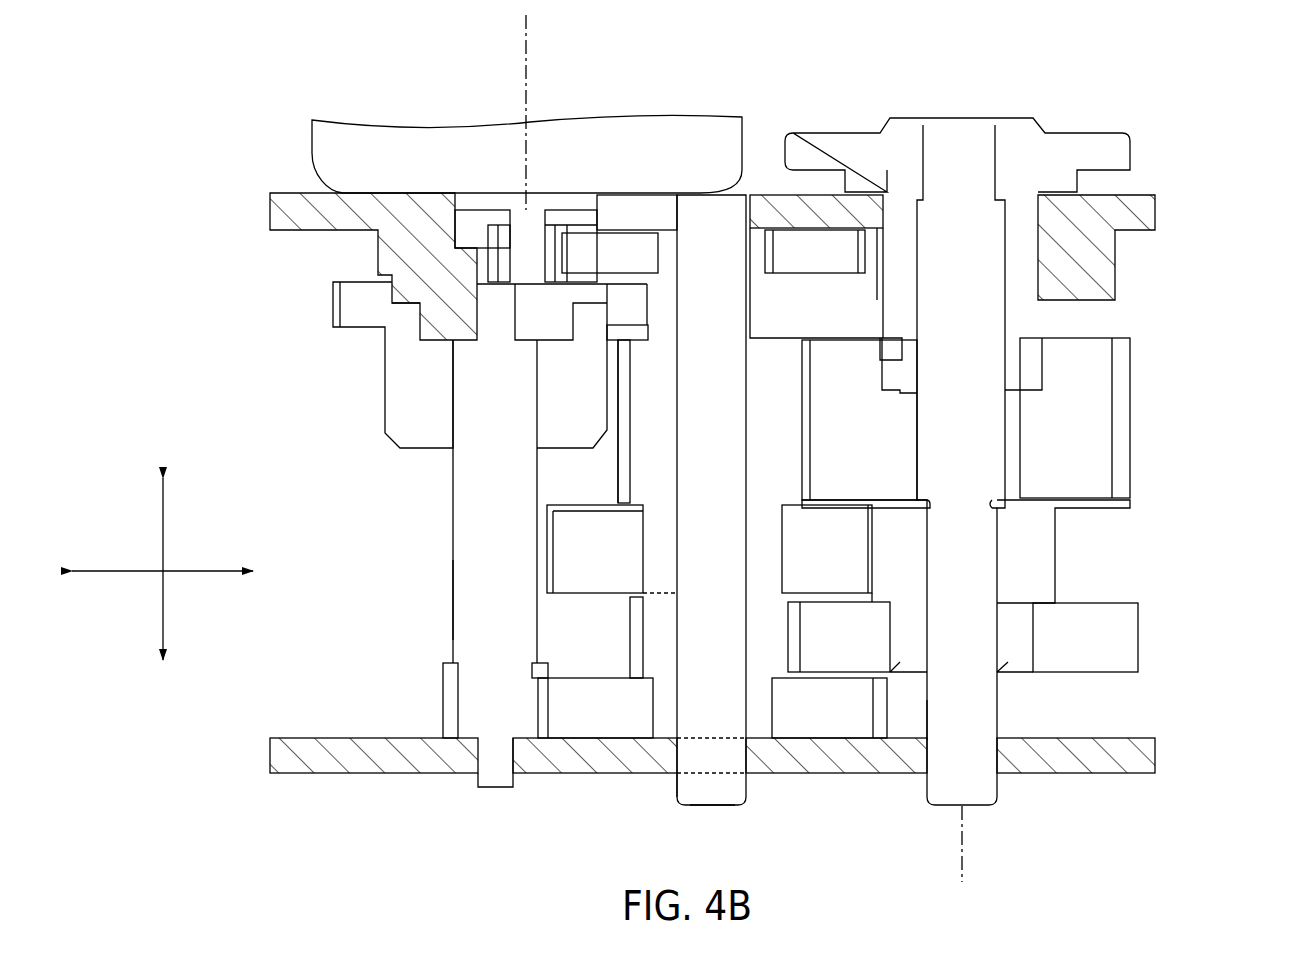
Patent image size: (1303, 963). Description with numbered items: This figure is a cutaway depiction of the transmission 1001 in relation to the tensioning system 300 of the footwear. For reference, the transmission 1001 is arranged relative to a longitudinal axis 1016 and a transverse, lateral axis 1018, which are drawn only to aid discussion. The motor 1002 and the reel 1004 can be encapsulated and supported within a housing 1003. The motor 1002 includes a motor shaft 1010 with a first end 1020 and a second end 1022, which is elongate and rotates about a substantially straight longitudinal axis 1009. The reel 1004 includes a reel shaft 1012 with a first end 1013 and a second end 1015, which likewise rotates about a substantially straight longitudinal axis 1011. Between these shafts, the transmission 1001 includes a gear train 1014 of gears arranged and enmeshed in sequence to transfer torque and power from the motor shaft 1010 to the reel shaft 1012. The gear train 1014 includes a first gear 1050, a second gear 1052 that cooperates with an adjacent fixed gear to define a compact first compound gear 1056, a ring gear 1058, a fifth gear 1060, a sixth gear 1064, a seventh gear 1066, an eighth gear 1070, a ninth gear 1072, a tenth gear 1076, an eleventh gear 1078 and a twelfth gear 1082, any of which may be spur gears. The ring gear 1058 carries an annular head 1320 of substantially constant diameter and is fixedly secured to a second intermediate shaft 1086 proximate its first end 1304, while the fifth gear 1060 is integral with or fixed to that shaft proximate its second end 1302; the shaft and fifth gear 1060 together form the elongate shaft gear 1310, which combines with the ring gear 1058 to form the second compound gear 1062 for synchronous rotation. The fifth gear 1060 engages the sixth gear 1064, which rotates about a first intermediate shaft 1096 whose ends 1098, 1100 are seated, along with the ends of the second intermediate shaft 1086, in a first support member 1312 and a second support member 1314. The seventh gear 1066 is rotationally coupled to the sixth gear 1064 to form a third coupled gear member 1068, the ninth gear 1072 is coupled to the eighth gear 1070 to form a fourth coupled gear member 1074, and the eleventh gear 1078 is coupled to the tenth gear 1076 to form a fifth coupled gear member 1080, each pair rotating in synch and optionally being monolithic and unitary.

The tensioning system 300 is at (288, 88).
The transmission 1001 is at (1217, 392).
The motor 1002 is at (332, 163).
The housing 1003 is at (868, 774).
The reel 1004 is at (1123, 160).
The longitudinal axis 1009 is at (535, 72).
The motor shaft 1010 is at (528, 238).
The longitudinal axis 1011 is at (968, 860).
The reel shaft 1012 is at (962, 323).
The first end 1013 is at (968, 207).
The gear train 1014 is at (594, 800).
The second end 1015 is at (975, 738).
The longitudinal axis 1016 is at (168, 516).
The lateral axis 1018 is at (188, 578).
The first end 1020 is at (545, 225).
The second end 1022 is at (488, 262).
The first gear 1050 is at (475, 260).
The second gear 1052 is at (762, 242).
The first compound gear 1056 is at (786, 286).
The ring gear 1058 is at (333, 300).
The fifth gear 1060 is at (447, 695).
The second compound gear 1062 is at (451, 518).
The sixth gear 1064 is at (597, 710).
The seventh gear 1066 is at (770, 653).
The third coupled gear member 1068 is at (620, 665).
The eighth gear 1070 is at (1130, 646).
The ninth gear 1072 is at (1025, 557).
The fourth coupled gear member 1074 is at (1096, 592).
The tenth gear 1076 is at (608, 565).
The eleventh gear 1078 is at (648, 478).
The fifth coupled gear member 1080 is at (606, 498).
The twelfth gear 1082 is at (1097, 432).
The second intermediate shaft 1086 is at (480, 557).
The first intermediate shaft 1096 is at (705, 762).
The end 1098 is at (710, 790).
The end 1100 is at (732, 218).
The second end 1302 is at (490, 780).
The first end 1304 is at (500, 312).
The elongate shaft gear 1310 is at (487, 588).
The first support member 1312 is at (355, 770).
The second support member 1314 is at (393, 200).
The head 1320 is at (400, 398).